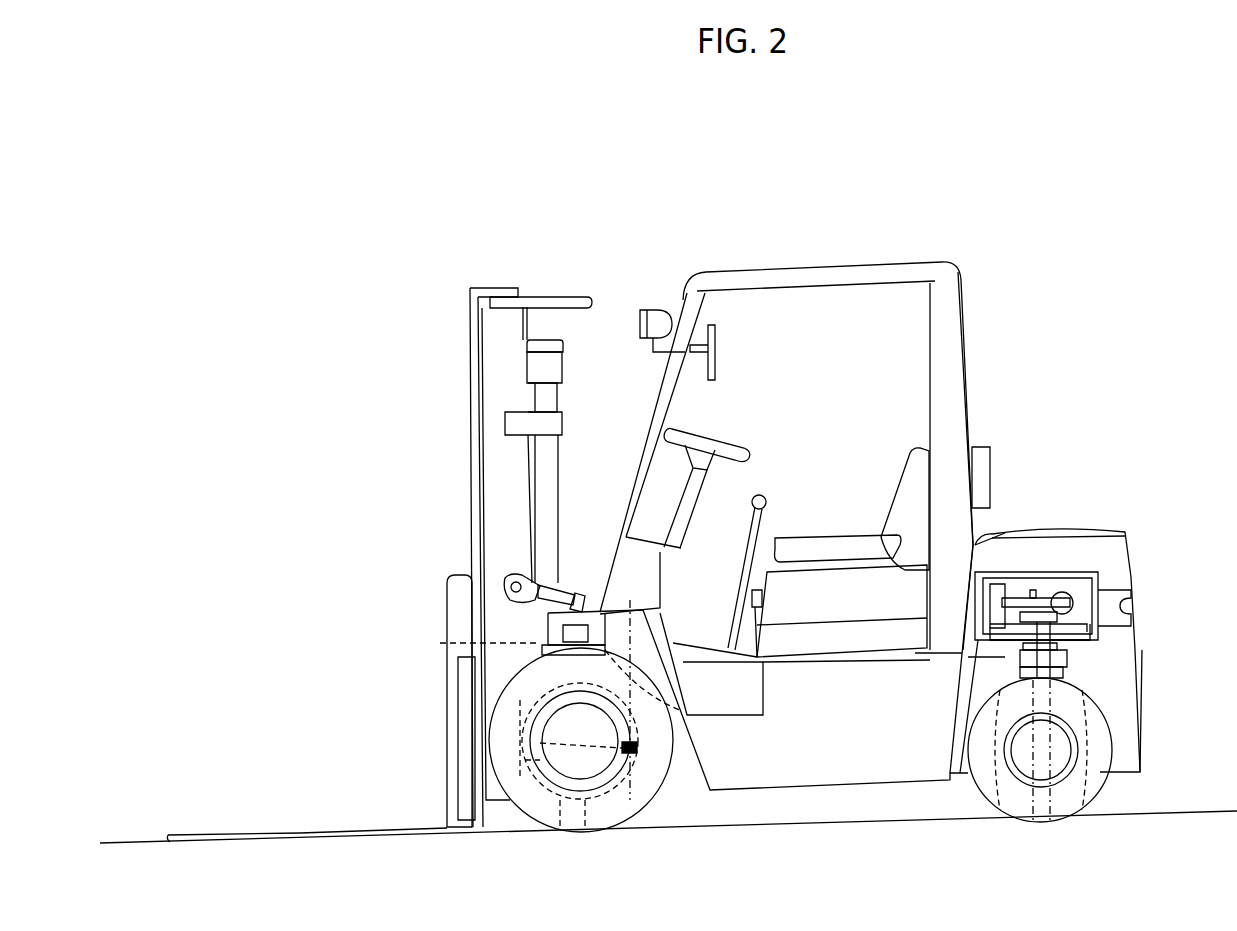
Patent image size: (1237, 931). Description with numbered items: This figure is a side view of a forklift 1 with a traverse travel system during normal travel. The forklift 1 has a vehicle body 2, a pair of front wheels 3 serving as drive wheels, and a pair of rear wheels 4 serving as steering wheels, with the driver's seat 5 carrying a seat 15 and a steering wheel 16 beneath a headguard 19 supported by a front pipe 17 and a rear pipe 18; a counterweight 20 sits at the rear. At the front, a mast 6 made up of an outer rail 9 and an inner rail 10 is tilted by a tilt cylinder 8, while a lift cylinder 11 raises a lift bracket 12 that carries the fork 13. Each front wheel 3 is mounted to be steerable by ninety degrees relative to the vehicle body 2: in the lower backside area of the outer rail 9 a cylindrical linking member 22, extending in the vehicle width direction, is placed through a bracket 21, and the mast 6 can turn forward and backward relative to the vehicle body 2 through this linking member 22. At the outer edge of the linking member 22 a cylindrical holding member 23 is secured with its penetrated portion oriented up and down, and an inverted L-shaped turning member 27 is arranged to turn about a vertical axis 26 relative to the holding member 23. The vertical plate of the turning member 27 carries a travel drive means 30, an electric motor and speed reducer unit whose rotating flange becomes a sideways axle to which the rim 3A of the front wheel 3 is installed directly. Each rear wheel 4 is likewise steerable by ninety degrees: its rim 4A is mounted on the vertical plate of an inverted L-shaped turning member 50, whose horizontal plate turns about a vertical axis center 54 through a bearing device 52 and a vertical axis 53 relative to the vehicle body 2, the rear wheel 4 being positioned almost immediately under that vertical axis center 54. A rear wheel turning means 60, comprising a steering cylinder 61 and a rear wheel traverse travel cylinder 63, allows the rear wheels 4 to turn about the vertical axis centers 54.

The forklift 1 is at (1050, 425).
The vehicle body 2 is at (821, 790).
The front wheel 3 is at (653, 833).
The rim 3A is at (585, 833).
The rear wheel 4 is at (1015, 800).
The rim 4A is at (1050, 800).
The driver's seat 5 is at (758, 350).
The mast 6 is at (470, 500).
The tilt cylinder 8 is at (590, 600).
The outer rail 9 is at (482, 380).
The inner rail 10 is at (470, 450).
The lift cylinder 11 is at (548, 470).
The lift bracket 12 is at (468, 700).
The fork 13 is at (232, 835).
The seat 15 is at (845, 540).
The steering wheel 16 is at (720, 438).
The front pipe 17 is at (682, 300).
The rear pipe 18 is at (938, 394).
The headguard 19 is at (865, 268).
The counterweight 20 is at (1048, 545).
The bracket 21 is at (548, 628).
The linking member 22 is at (540, 643).
The holding member 23 is at (630, 600).
The vertical axis 26 is at (610, 650).
The turning member 27 is at (680, 710).
The travel drive means 30 is at (637, 748).
The turning member 50 is at (1062, 675).
The bearing device 52 is at (1015, 665).
The vertical axis 53 is at (1020, 648).
The vertical axis center 54 is at (1090, 642).
The rear wheel turning means 60 is at (1098, 576).
The steering cylinder 61 is at (988, 585).
The rear wheel traverse travel cylinder 63 is at (1112, 600).